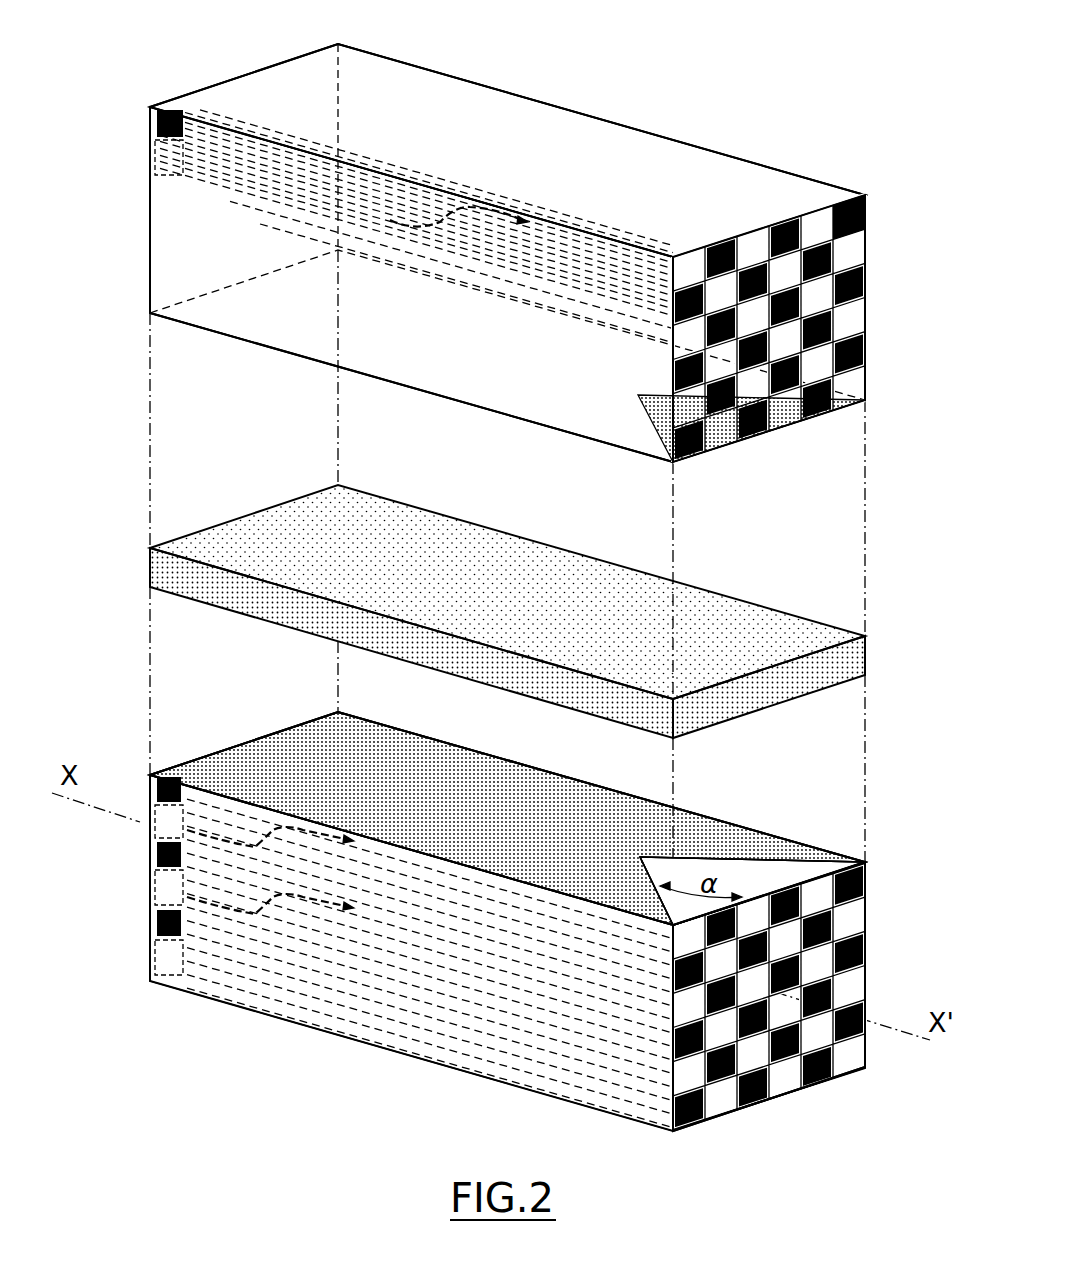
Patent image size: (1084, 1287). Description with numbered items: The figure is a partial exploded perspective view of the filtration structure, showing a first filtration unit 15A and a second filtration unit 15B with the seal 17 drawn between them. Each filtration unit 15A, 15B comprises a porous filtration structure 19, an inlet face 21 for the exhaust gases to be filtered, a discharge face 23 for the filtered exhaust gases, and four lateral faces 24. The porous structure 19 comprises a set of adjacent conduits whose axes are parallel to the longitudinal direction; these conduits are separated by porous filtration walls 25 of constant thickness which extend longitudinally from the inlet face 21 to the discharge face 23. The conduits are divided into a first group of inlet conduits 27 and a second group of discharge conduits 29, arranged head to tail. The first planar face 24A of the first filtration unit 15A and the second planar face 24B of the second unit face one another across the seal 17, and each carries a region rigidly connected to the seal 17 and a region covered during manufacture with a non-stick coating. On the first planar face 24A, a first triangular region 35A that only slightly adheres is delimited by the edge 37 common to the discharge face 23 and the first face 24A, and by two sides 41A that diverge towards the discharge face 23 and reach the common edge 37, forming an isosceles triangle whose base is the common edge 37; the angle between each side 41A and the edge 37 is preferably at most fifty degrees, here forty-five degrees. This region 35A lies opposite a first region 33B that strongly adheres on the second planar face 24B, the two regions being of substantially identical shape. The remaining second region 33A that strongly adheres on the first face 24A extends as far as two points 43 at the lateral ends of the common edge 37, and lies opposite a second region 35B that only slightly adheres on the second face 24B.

The first filtration unit 15A is at (398, 1065).
The second filtration unit 15B is at (537, 80).
The seal 17 is at (162, 566).
The porous filtration structure 19 is at (172, 224).
The inlet face 21 is at (262, 70).
The discharge face 23 is at (866, 302).
The lateral face 24 is at (755, 175).
The first planar face 24A is at (711, 828).
The second planar face 24B is at (400, 395).
The porous filtration wall 25 is at (823, 228).
The inlet conduit 27 is at (367, 212).
The discharge conduit 29 is at (268, 132).
The second region that strongly adheres 33A is at (452, 765).
The first region that strongly adheres 33B is at (653, 427).
The first triangular region that only slightly adheres 35A is at (771, 872).
The second region that only slightly adheres 35B is at (240, 328).
The common edge 37 is at (812, 882).
The side 41A is at (657, 848).
The point 43 is at (867, 862).